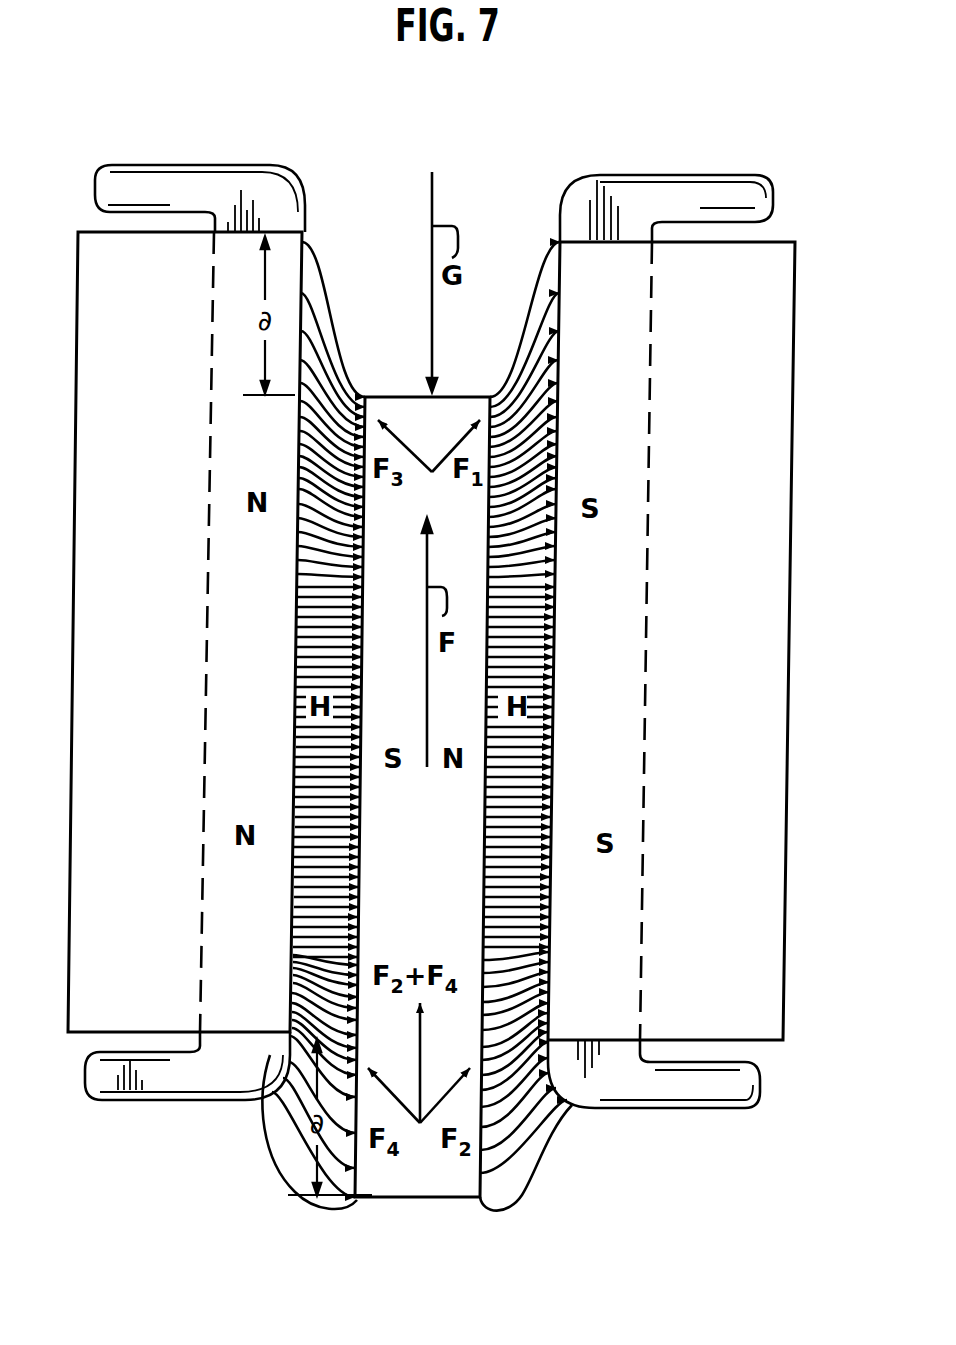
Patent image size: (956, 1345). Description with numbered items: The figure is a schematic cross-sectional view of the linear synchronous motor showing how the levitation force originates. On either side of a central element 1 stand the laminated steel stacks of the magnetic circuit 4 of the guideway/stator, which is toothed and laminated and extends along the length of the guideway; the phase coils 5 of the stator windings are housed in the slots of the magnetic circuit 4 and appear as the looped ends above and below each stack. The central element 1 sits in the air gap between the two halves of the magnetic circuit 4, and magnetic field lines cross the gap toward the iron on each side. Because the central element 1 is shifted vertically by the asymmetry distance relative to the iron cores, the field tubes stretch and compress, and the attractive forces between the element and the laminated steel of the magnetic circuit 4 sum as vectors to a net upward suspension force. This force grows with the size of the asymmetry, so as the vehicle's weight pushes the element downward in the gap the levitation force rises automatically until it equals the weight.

The movable magnetic body 1 is at (458, 1172).
The magnetic circuit 4 is at (748, 372).
The phase coils 5 is at (755, 210).